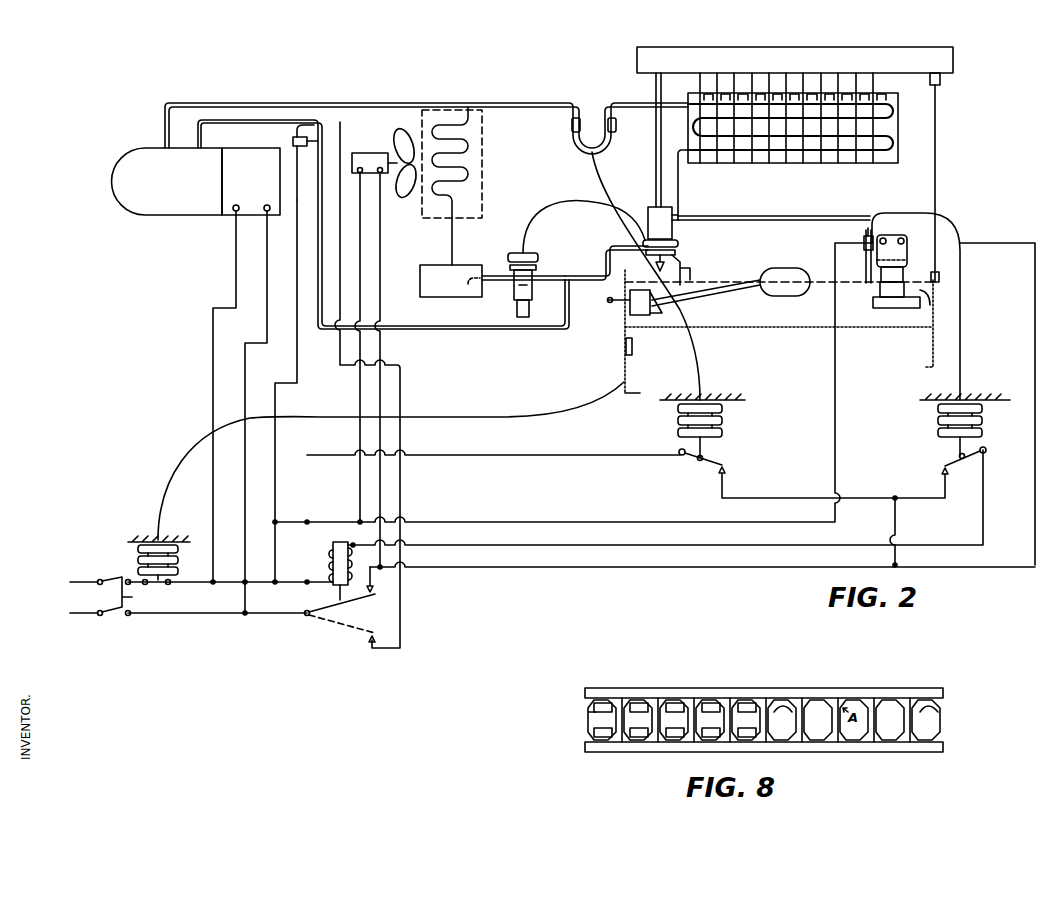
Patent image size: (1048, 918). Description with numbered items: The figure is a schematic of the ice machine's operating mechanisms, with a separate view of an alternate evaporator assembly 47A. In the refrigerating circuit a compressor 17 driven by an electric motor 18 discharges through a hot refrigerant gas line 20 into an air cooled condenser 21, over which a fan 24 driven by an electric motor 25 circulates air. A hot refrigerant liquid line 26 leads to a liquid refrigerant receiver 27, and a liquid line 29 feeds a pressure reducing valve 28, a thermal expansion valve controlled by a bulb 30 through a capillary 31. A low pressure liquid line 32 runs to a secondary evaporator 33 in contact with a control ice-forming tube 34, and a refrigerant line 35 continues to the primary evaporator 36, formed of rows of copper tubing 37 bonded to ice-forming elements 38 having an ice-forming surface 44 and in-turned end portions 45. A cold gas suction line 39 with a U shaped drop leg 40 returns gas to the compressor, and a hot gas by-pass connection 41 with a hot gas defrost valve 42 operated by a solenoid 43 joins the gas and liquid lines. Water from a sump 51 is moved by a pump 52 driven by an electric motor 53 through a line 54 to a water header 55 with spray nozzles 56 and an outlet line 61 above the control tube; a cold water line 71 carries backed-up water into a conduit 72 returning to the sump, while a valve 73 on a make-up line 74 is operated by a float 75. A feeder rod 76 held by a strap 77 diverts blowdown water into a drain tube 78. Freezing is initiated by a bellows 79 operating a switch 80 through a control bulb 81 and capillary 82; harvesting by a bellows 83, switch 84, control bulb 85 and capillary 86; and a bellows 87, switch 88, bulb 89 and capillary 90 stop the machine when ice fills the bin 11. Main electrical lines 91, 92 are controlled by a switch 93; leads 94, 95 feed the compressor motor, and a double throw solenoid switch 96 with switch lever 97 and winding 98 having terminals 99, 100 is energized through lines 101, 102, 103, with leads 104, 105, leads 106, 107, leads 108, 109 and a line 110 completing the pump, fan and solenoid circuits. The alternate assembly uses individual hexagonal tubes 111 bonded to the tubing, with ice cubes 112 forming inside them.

In FIG. 2, the bin 11 is at (622, 390).
In FIG. 2, the compressor 17 is at (186, 181).
In FIG. 2, the electric motor 18 is at (255, 181).
In FIG. 2, the hot refrigerant gas line 20 is at (250, 103).
In FIG. 2, the air cooled condenser 21 is at (493, 150).
In FIG. 2, the fan 24 is at (405, 192).
In FIG. 2, the electric motor 25 is at (370, 153).
In FIG. 2, the hot refrigerant liquid line 26 is at (455, 240).
In FIG. 2, the liquid refrigerant receiver 27 is at (451, 281).
In FIG. 2, the pressure reducing valve 28 is at (530, 258).
In FIG. 2, the liquid line 29 is at (500, 282).
In FIG. 2, the bulb 30 is at (616, 125).
In FIG. 2, the capillary 31 is at (548, 205).
In FIG. 2, the low pressure liquid line 32 is at (580, 276).
In FIG. 2, the secondary evaporator 33 is at (678, 243).
In FIG. 2, the control ice-forming tube 34 is at (650, 214).
In FIG. 2, the refrigerant line 35 is at (679, 190).
In FIG. 2, the primary evaporator 36 is at (773, 170).
In FIG. 2, the copper tubing 37 is at (821, 152).
In FIG. 8, the copper tubing 37 is at (860, 690).
In FIG. 2, the ice-forming elements 38 is at (866, 158).
In FIG. 2, the cold gas suction line 39 is at (500, 103).
In FIG. 2, the U shaped drop leg 40 is at (584, 152).
In FIG. 2, the hot gas by-pass connection 41 is at (325, 125).
In FIG. 2, the hot gas defrost valve 42 is at (304, 173).
In FIG. 2, the solenoid 43 is at (296, 133).
In FIG. 8, the ice-forming surface 44 is at (946, 704).
In FIG. 8, the in-turned end portions 45 is at (784, 700).
In FIG. 8, the alternate evaporator assembly 47A is at (622, 683).
In FIG. 2, the sump 51 is at (812, 318).
In FIG. 2, the pump 52 is at (908, 300).
In FIG. 2, the electric motor 53 is at (892, 236).
In FIG. 2, the line 54 is at (936, 180).
In FIG. 2, the water header 55 is at (953, 60).
In FIG. 2, the spray nozzles 56 is at (940, 84).
In FIG. 2, the outlet line 61 is at (655, 172).
In FIG. 2, the cold water line 71 is at (800, 221).
In FIG. 2, the conduit 72 is at (866, 264).
In FIG. 2, the valve 73 is at (640, 316).
In FIG. 2, the line 74 is at (612, 302).
In FIG. 2, the float 75 is at (790, 270).
In FIG. 2, the feeder rod 76 is at (692, 266).
In FIG. 2, the strap 77 is at (654, 262).
In FIG. 2, the drain tube 78 is at (690, 295).
In FIG. 2, the bellows 79 is at (724, 420).
In FIG. 2, the switch 80 is at (724, 461).
In FIG. 2, the control bulb 81 is at (571, 125).
In FIG. 2, the capillary 82 is at (598, 206).
In FIG. 2, the bellows 83 is at (936, 416).
In FIG. 2, the switch 84 is at (948, 458).
In FIG. 2, the control bulb 85 is at (864, 240).
In FIG. 2, the capillary 86 is at (962, 312).
In FIG. 2, the bellows 87 is at (180, 549).
In FIG. 2, the switch 88 is at (170, 580).
In FIG. 2, the bulb 89 is at (626, 348).
In FIG. 2, the capillary 90 is at (480, 417).
In FIG. 2, the main electrical line 91 is at (216, 615).
In FIG. 2, the main electrical line 92 is at (228, 580).
In FIG. 2, the switch 93 is at (110, 578).
In FIG. 2, the lead 94 is at (266, 320).
In FIG. 2, the lead 95 is at (212, 290).
In FIG. 2, the double throw solenoid switch 96 is at (335, 630).
In FIG. 2, the switch lever 97 is at (362, 594).
In FIG. 2, the winding 98 is at (333, 548).
In FIG. 2, the terminal 99 is at (352, 543).
In FIG. 2, the terminal 100 is at (328, 584).
In FIG. 2, the line 101 is at (640, 546).
In FIG. 2, the line 102 is at (842, 495).
In FIG. 2, the line 103 is at (490, 453).
In FIG. 2, the lead 104 is at (748, 566).
In FIG. 2, the lead 105 is at (556, 521).
In FIG. 2, the lead 106 is at (382, 356).
In FIG. 2, the lead 107 is at (362, 344).
In FIG. 2, the lead 108 is at (341, 228).
In FIG. 2, the lead 109 is at (296, 362).
In FIG. 2, the line 110 is at (892, 516).
In FIG. 8, the hexagonal tubes 111 is at (588, 712).
In FIG. 8, the ice cubes 112 is at (678, 704).